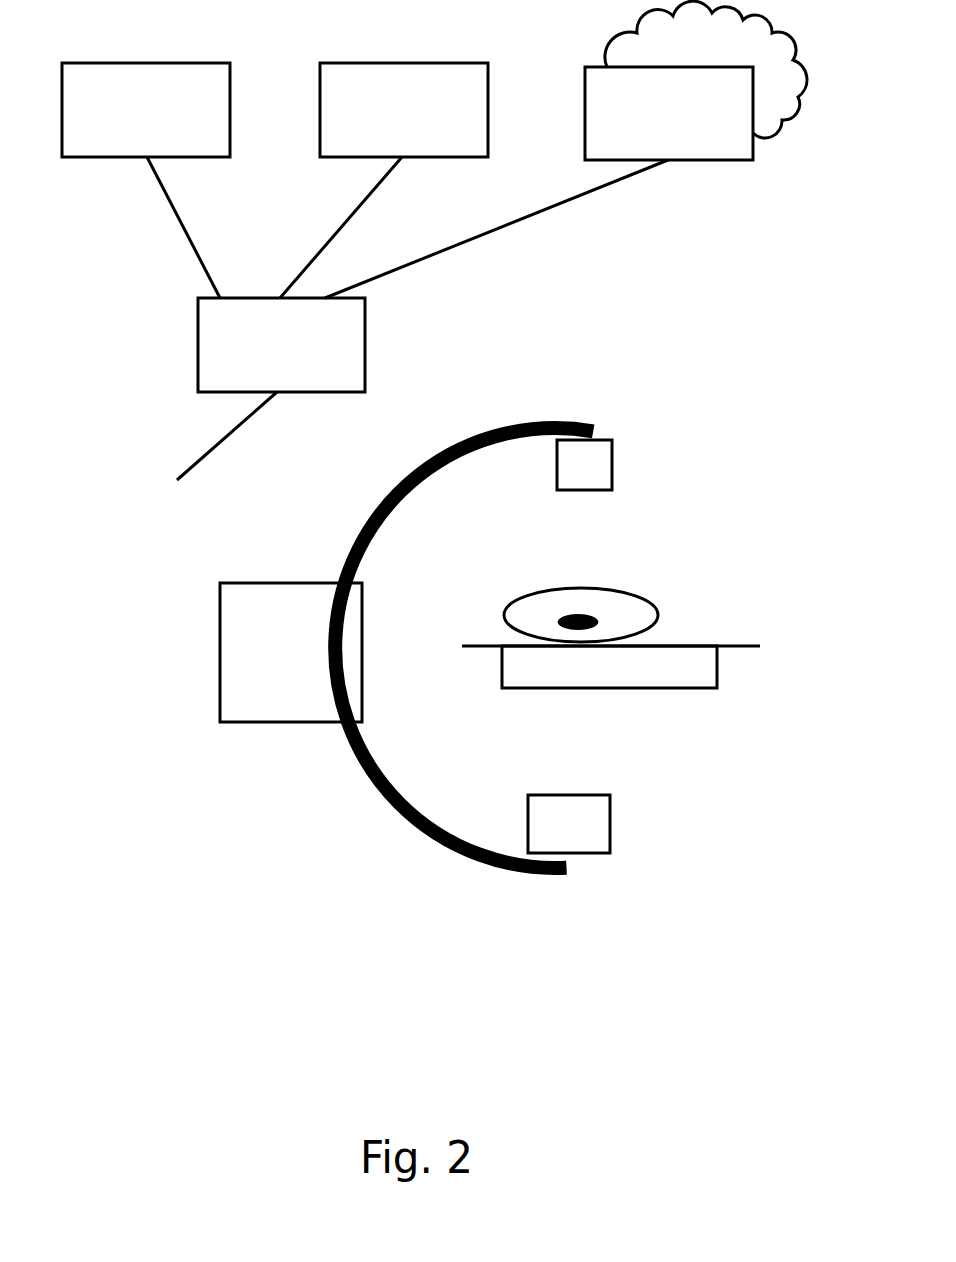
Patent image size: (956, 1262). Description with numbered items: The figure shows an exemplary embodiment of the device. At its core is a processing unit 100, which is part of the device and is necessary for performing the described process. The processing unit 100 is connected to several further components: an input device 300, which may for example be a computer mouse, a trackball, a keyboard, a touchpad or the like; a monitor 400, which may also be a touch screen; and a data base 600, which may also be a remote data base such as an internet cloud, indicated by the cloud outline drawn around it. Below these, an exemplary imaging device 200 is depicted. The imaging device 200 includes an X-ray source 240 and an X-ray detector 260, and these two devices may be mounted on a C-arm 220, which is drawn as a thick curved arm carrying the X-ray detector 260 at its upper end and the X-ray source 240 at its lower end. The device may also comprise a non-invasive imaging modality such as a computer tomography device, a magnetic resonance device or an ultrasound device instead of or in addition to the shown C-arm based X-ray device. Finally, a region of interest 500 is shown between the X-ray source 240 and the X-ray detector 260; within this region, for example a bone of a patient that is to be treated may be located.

The processing unit 100 is at (407, 318).
The imaging device 200 is at (426, 637).
The C-arm 220 is at (413, 783).
The X-ray source 240 is at (610, 827).
The X-ray detector 260 is at (612, 463).
The input device 300 is at (146, 110).
The monitor 400 is at (404, 110).
The region of interest 500 is at (590, 613).
The data base 600 is at (696, 80).